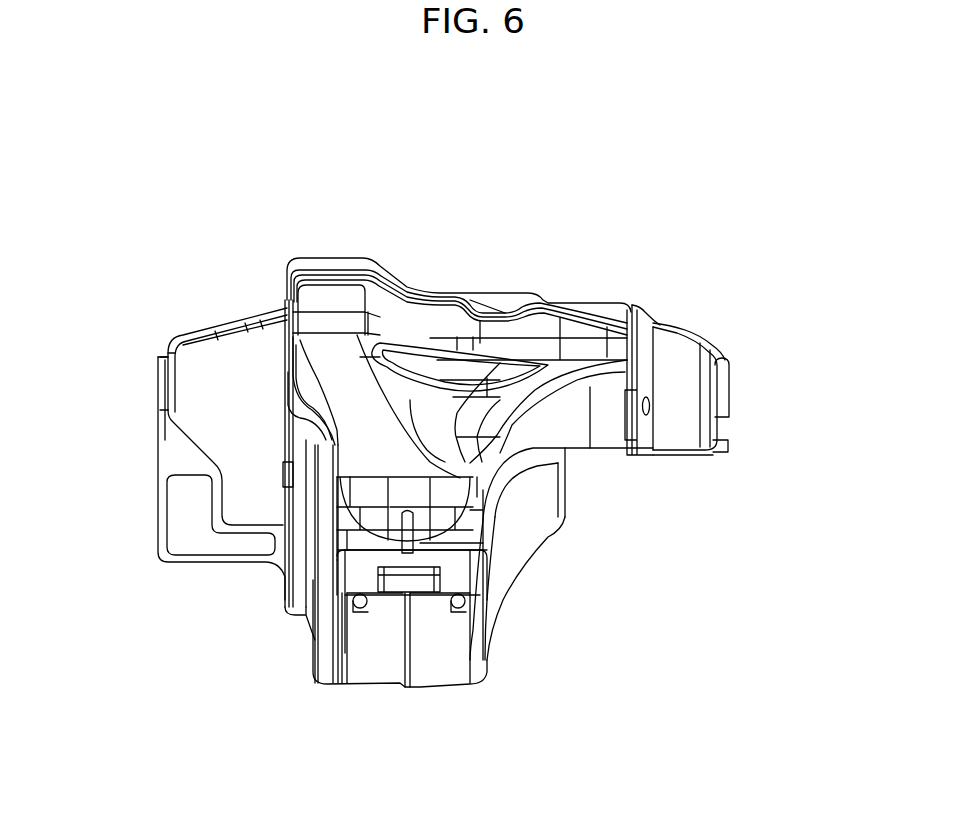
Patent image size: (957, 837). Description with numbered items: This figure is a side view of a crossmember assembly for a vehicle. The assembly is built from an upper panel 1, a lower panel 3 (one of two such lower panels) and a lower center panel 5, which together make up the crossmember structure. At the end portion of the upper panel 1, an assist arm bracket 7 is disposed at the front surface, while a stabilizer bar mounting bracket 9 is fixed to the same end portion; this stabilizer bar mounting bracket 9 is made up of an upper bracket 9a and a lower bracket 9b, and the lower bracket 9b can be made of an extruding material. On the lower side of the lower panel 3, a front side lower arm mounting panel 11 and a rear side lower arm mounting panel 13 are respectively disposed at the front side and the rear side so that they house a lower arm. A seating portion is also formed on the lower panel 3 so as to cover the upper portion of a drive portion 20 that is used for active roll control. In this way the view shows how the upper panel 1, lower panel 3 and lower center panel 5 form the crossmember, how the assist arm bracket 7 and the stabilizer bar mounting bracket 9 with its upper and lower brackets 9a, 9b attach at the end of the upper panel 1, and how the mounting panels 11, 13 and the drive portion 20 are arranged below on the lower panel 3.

The upper panel 1 is at (348, 272).
The lower panel 3 is at (537, 335).
The lower center panel 5 is at (450, 567).
The assist arm bracket 7 is at (680, 435).
The stabilizer bar mounting bracket 9 is at (75, 347).
The upper bracket 9a is at (193, 333).
The lower bracket 9b is at (190, 458).
The front side lower arm mounting panel 11 is at (483, 623).
The rear side lower arm mounting panel 13 is at (378, 655).
The drive portion 20 is at (440, 503).